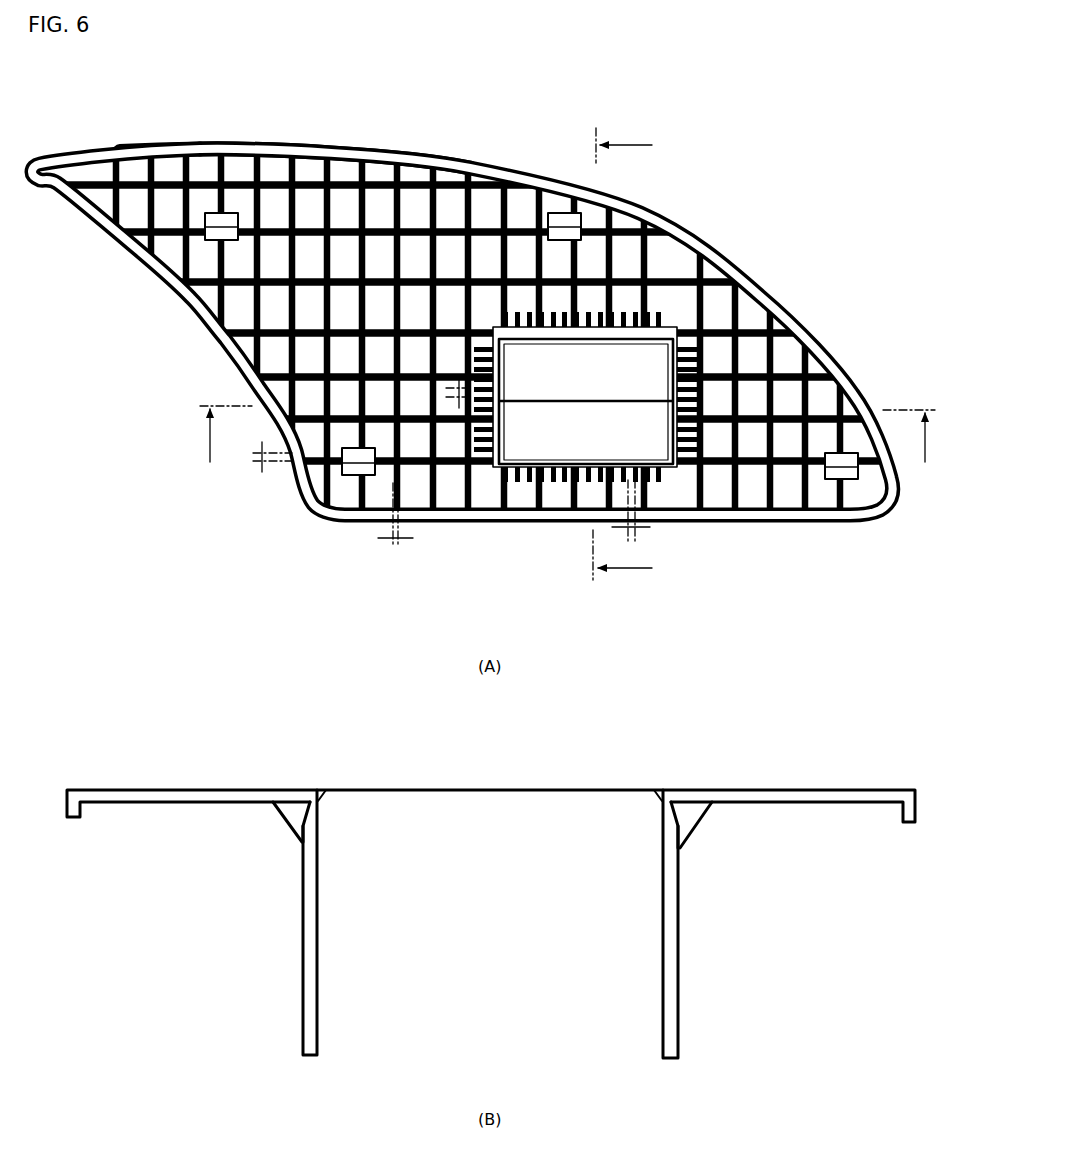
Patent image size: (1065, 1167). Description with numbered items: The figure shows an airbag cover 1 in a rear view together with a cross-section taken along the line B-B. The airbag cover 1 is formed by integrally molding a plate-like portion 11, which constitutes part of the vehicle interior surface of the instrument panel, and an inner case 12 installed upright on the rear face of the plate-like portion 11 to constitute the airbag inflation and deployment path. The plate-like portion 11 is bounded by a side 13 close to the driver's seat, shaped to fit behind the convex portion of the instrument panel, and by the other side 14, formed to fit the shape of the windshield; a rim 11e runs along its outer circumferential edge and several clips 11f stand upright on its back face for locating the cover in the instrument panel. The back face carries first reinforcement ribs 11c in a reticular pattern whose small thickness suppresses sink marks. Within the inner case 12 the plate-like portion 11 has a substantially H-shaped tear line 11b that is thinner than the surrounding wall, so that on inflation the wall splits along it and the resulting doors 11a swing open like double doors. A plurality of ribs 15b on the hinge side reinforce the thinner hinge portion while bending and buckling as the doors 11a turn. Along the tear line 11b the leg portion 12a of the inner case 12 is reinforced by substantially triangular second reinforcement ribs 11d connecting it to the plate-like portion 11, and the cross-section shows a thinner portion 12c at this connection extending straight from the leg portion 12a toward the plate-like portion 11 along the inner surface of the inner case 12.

The airbag cover 1 is at (752, 213).
The plate-like portion 11 is at (460, 335).
The door 11a is at (642, 381).
The tear line 11b is at (505, 365).
The first reinforcement rib 11c is at (460, 323).
The second reinforcement rib 11d is at (711, 342).
The rim 11e is at (208, 152).
The clip 11f is at (230, 215).
The inner case 12 is at (491, 626).
The leg portion 12a is at (562, 343).
The thinner portion 12c is at (318, 812).
The side 13 is at (185, 305).
The other side 14 is at (332, 147).
The rib 15b is at (661, 318).